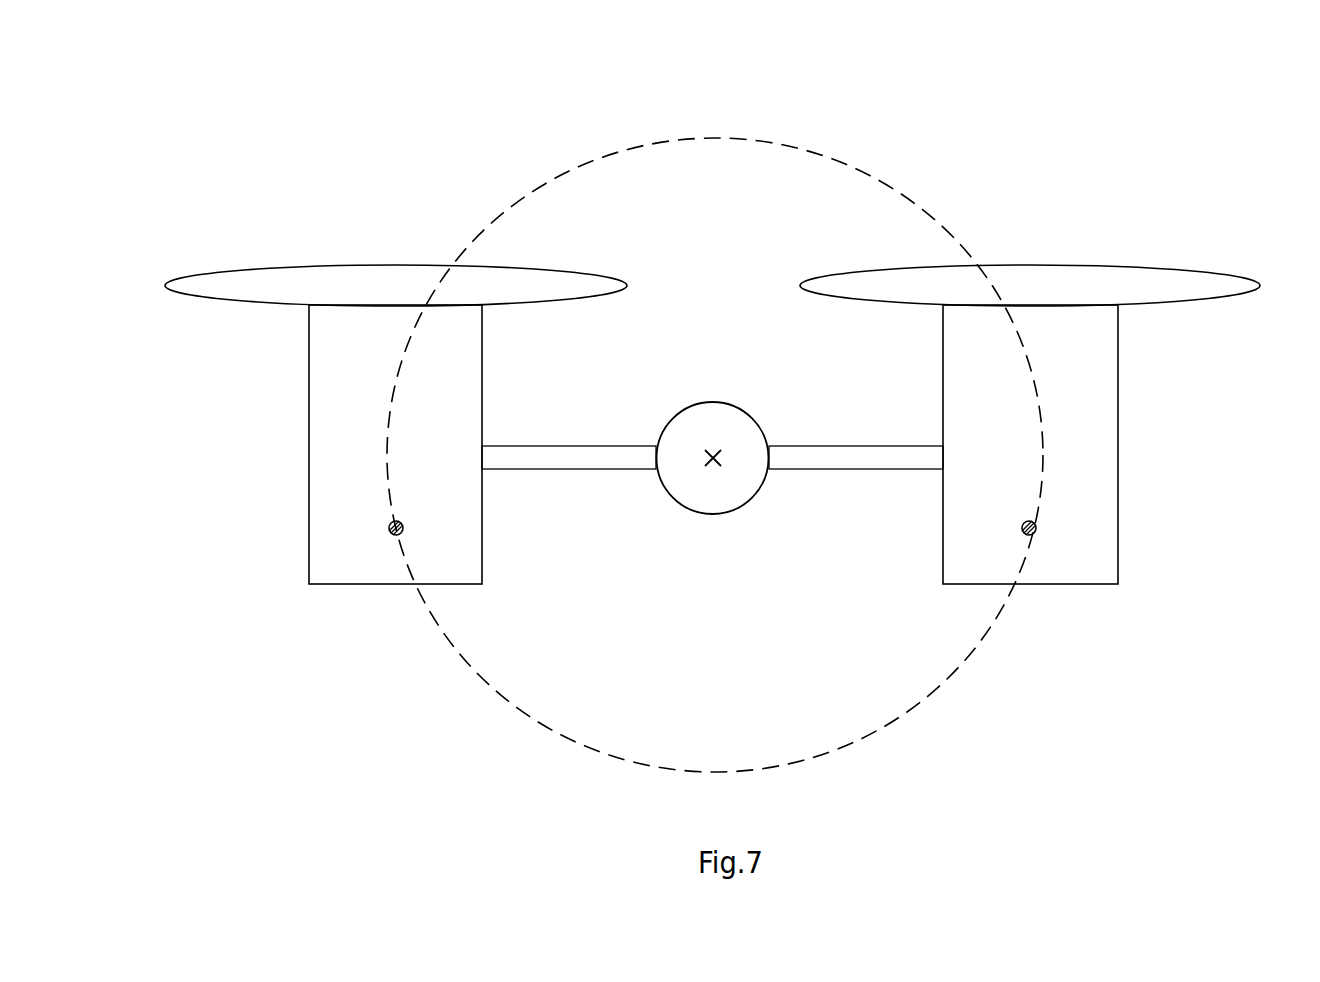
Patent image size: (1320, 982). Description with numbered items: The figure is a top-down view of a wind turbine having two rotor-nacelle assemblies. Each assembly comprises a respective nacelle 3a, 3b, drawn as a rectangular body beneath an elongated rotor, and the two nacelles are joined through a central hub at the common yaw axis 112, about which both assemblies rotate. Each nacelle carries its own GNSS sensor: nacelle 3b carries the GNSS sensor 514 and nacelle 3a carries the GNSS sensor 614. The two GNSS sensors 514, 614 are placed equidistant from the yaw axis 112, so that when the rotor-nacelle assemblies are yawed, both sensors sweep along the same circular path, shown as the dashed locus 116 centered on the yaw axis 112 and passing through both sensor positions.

The locus 116 is at (582, 165).
The yaw axis 112 is at (707, 452).
The nacelle 3b is at (353, 583).
The nacelle 3a is at (1058, 585).
The GNSS sensor 514 is at (389, 529).
The GNSS sensor 614 is at (1037, 530).